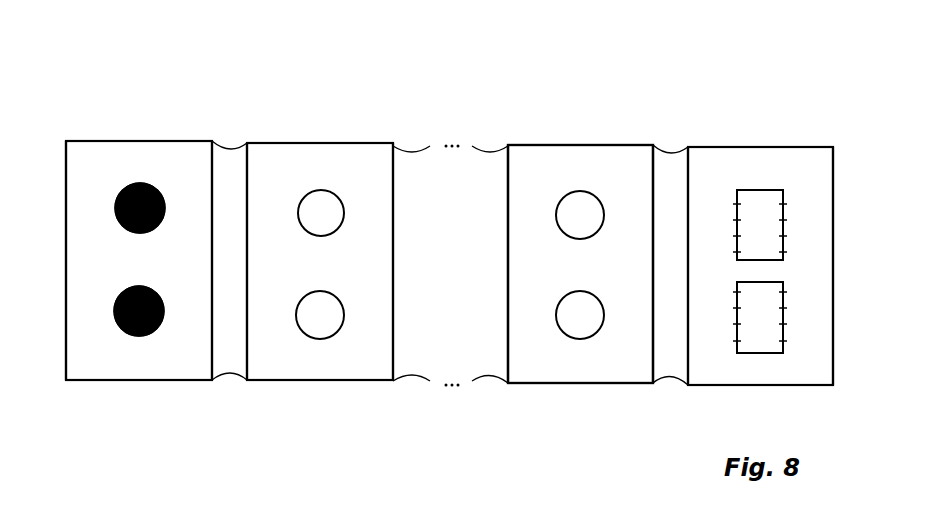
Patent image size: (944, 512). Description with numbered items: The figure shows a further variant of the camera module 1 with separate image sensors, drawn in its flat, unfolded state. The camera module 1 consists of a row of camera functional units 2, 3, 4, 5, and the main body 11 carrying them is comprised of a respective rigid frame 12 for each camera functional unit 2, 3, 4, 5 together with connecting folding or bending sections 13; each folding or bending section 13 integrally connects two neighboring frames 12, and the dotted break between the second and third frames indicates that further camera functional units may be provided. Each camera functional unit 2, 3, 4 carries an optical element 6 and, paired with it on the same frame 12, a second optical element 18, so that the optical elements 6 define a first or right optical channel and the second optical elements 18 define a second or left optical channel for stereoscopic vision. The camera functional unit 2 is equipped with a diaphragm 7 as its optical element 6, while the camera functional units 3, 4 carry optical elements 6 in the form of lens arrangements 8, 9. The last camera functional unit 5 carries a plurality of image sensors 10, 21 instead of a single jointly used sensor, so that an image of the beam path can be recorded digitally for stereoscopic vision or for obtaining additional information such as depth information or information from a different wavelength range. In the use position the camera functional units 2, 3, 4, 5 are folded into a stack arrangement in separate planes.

The camera module 1 is at (477, 73).
The camera functional unit 2 is at (135, 410).
The camera functional unit 3 is at (318, 410).
The camera functional unit 4 is at (572, 410).
The camera functional unit 5 is at (760, 280).
The optical element 6 is at (117, 182).
The diaphragm 7 is at (166, 204).
The lens arrangement 8 is at (323, 206).
The lens arrangement 9 is at (586, 210).
The image sensor 10 is at (755, 210).
The main body 11 is at (535, 166).
The frame 12 is at (183, 375).
The folding or bending section 13 is at (231, 370).
The second optical element 18 is at (114, 326).
The image sensor 21 is at (765, 345).